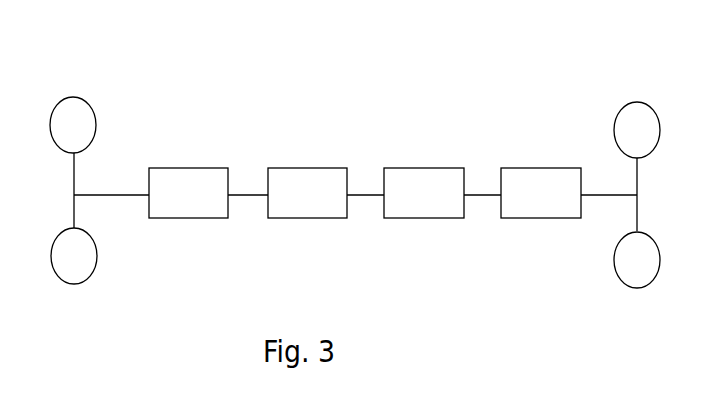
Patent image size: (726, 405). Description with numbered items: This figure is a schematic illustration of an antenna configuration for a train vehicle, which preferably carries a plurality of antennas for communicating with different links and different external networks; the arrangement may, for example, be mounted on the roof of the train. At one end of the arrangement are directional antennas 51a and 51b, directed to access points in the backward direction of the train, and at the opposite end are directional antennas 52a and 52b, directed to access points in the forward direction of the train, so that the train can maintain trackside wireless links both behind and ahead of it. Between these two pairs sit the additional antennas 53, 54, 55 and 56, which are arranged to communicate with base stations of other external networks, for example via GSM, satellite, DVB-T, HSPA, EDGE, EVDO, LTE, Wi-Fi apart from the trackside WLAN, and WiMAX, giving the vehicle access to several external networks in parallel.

The directional antenna 51a is at (85, 97).
The directional antenna 51b is at (76, 283).
The directional antenna 52a is at (639, 102).
The directional antenna 52b is at (635, 288).
The additional antenna 53 is at (178, 168).
The additional antenna 54 is at (298, 168).
The additional antenna 55 is at (423, 168).
The additional antenna 56 is at (530, 168).